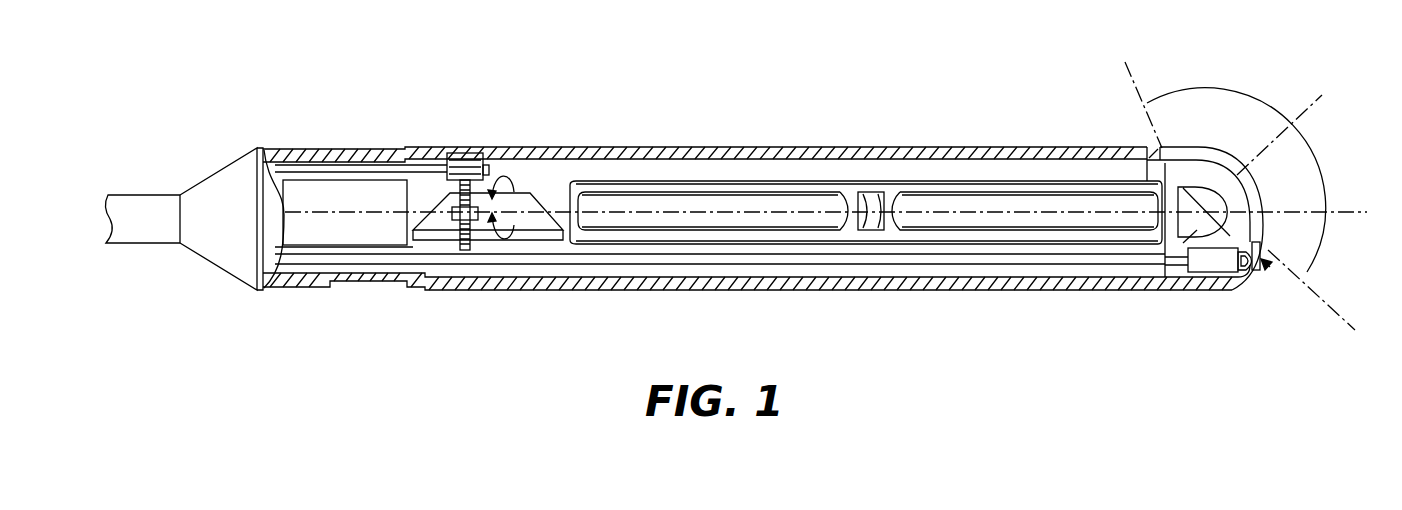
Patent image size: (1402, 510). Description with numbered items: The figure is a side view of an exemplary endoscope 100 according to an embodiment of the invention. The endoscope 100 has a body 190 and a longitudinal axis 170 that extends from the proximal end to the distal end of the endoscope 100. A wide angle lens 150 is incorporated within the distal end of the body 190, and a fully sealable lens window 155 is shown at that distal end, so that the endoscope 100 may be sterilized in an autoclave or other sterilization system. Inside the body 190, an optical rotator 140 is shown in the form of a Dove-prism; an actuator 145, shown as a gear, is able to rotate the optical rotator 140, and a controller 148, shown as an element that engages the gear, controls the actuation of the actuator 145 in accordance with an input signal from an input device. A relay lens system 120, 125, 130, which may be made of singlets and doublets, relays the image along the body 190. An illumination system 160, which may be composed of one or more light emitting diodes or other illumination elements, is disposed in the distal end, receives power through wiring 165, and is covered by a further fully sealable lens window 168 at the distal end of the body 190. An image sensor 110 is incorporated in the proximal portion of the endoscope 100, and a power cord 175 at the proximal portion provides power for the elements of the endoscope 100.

The endoscope 100 is at (838, 98).
The image sensor 110 is at (291, 197).
The relay lens system 120 is at (723, 205).
The relay lens system 125 is at (875, 202).
The relay lens system 130 is at (983, 205).
The optical rotator 140 is at (448, 200).
The actuator 145 is at (478, 245).
The controller 148 is at (466, 175).
The wide angle lens 150 is at (1185, 283).
The lens window 155 is at (1217, 163).
The illumination system 160 is at (1232, 263).
The wiring 165 is at (973, 260).
The lens window 168 is at (1268, 265).
The longitudinal axis 170 is at (1345, 212).
The power cord 175 is at (155, 200).
The body 190 is at (718, 290).